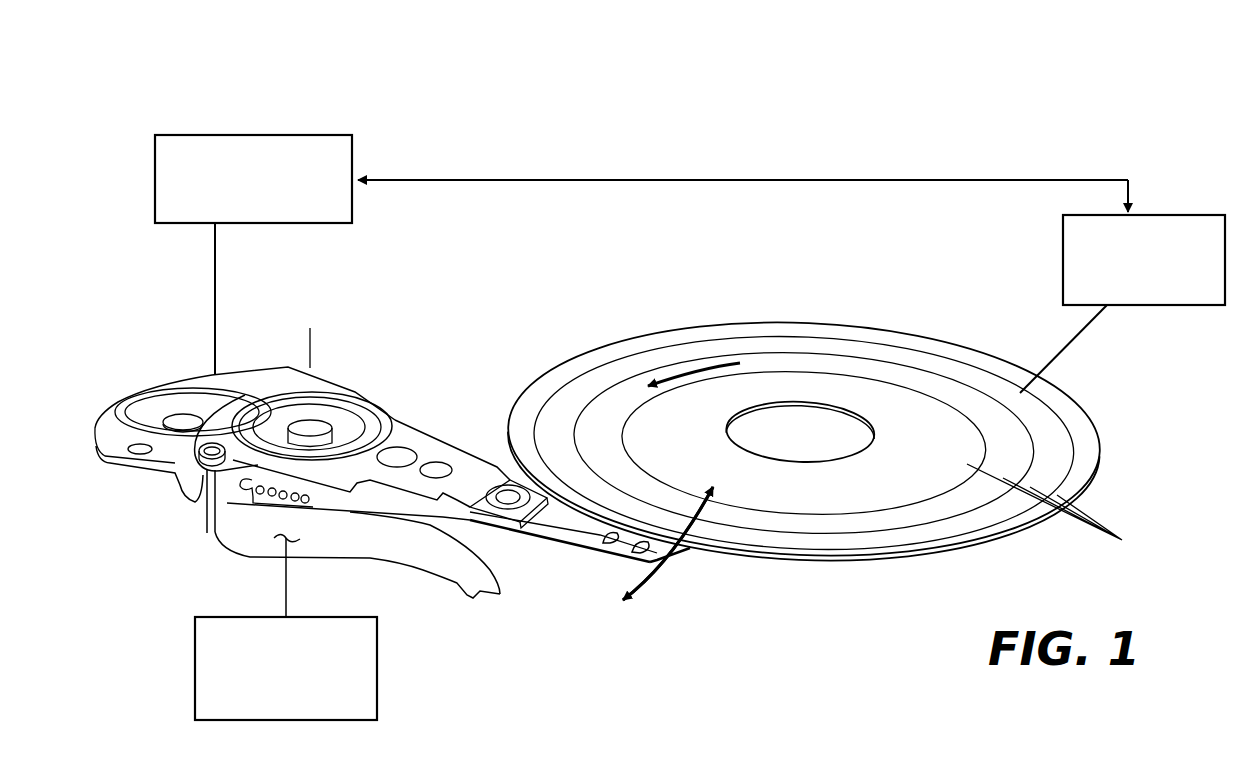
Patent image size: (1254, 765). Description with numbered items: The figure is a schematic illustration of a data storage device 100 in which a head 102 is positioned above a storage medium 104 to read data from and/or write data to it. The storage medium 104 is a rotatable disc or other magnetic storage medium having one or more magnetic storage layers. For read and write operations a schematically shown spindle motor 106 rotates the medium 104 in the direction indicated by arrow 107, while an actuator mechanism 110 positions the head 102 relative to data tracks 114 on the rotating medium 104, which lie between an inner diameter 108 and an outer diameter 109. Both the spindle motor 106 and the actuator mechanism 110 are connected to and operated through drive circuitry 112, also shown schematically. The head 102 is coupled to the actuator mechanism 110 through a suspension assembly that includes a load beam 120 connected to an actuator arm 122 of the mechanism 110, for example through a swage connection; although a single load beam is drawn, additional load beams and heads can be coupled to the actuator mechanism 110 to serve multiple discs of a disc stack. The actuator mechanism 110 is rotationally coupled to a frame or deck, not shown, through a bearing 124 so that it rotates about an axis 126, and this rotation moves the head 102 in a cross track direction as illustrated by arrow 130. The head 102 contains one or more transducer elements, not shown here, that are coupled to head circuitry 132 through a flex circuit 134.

The data storage device 100 is at (1000, 120).
The head 102 is at (683, 568).
The storage medium 104 is at (944, 338).
The spindle motor 106 is at (1180, 215).
The arrow 107 is at (703, 370).
The inner diameter 108 is at (846, 404).
The outer diameter 109 is at (808, 323).
The actuator mechanism 110 is at (338, 378).
The drive circuitry 112 is at (353, 146).
The data tracks 114 is at (1063, 509).
The load beam 120 is at (577, 521).
The actuator arm 122 is at (450, 448).
The bearing 124 is at (302, 420).
The axis 126 is at (306, 352).
The arrow 130 is at (690, 530).
The head circuitry 132 is at (377, 665).
The flex circuit 134 is at (366, 549).